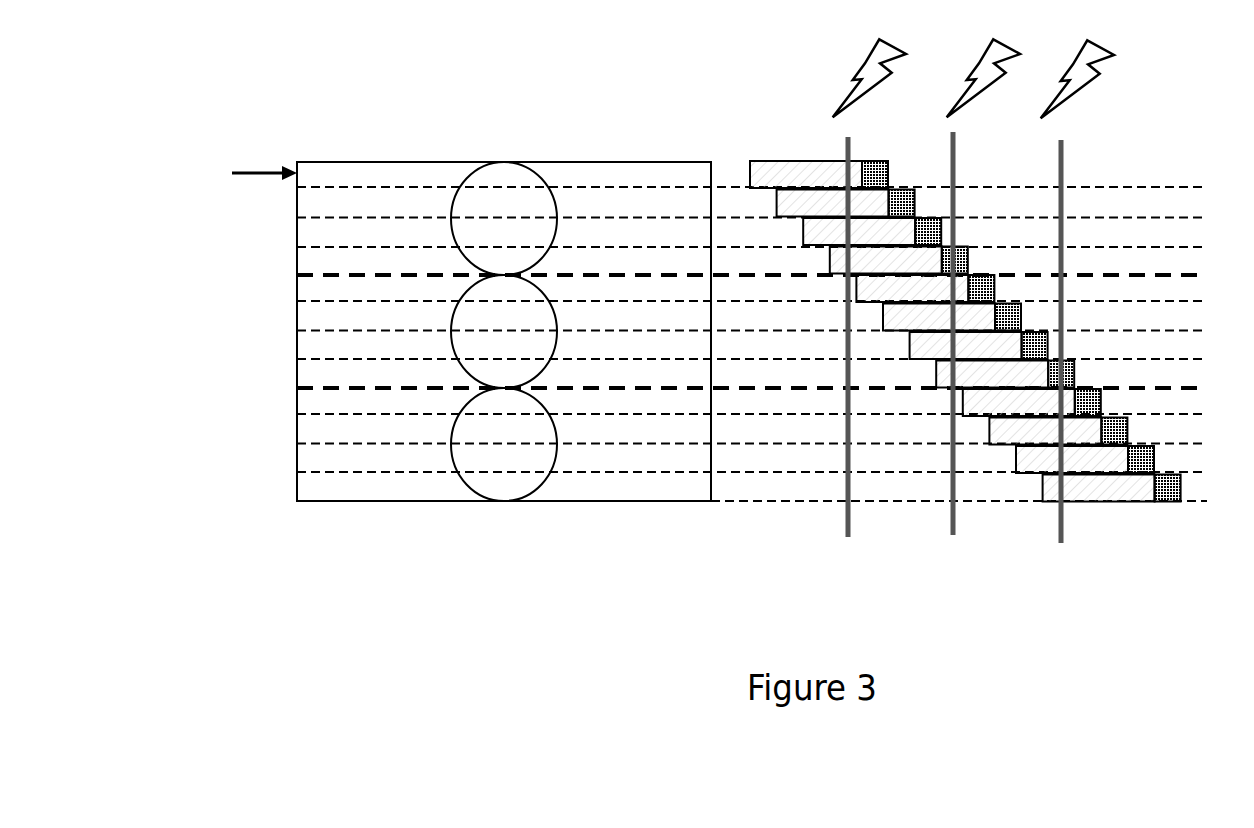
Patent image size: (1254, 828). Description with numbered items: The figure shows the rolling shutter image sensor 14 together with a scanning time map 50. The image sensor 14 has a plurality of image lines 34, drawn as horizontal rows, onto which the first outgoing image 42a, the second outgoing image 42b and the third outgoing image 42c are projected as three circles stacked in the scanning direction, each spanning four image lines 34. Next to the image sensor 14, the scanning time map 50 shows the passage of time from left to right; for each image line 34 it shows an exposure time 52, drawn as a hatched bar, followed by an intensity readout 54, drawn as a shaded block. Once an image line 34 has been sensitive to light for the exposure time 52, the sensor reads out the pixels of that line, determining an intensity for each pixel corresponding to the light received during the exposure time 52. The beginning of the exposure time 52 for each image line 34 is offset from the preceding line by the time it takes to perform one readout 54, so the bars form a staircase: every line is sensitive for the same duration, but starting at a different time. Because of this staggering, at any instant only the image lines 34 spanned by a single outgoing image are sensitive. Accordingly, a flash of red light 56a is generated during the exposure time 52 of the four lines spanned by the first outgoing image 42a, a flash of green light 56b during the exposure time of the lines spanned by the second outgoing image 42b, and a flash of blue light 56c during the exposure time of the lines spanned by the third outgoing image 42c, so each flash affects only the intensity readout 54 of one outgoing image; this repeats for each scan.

The image sensor 14 is at (348, 162).
The image lines 34 is at (253, 175).
The first outgoing image 42a is at (537, 175).
The second outgoing image 42b is at (452, 356).
The third outgoing image 42c is at (473, 488).
The scanning time map 50 is at (1152, 130).
The exposure time 52 is at (768, 170).
The intensity readout 54 is at (876, 162).
The flash of red light 56a is at (843, 520).
The flash of green light 56b is at (952, 516).
The flash of blue light 56c is at (1057, 520).